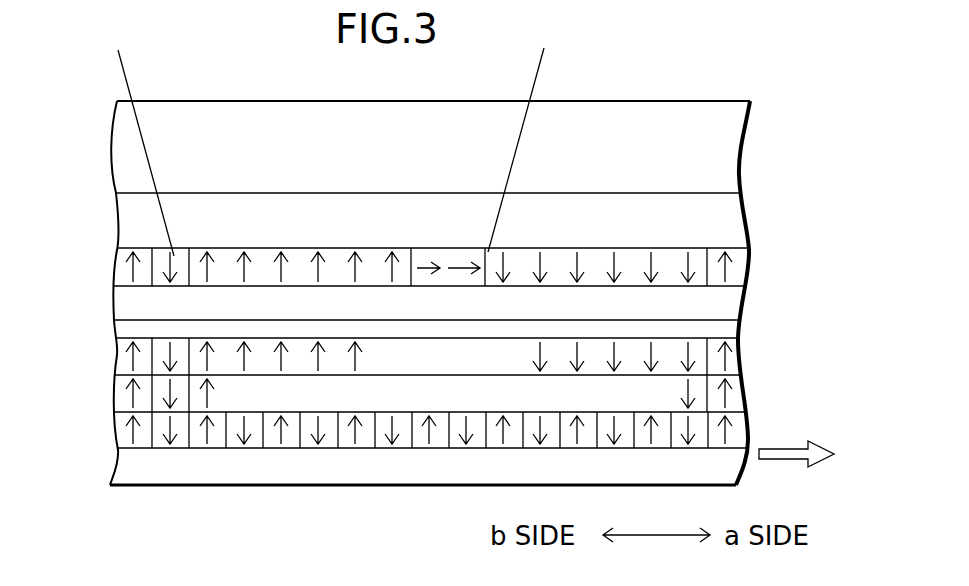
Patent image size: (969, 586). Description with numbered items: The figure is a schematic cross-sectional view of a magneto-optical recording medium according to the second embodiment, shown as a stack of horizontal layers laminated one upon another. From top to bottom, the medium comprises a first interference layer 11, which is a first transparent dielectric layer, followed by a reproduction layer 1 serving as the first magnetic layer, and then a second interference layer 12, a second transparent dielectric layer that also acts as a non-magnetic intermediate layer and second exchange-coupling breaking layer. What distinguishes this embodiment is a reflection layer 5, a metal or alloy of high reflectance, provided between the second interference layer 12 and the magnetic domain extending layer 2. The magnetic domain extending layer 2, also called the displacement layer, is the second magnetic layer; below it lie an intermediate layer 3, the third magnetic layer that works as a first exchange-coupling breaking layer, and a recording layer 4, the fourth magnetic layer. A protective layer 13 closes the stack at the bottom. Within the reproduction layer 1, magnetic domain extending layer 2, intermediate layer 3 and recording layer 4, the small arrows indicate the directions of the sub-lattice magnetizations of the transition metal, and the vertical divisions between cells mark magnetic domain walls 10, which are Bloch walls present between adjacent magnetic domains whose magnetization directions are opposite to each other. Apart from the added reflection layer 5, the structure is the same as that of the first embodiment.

The reproduction layer 1 is at (118, 263).
The magnetic domain extending layer 2 is at (117, 372).
The intermediate layer 3 is at (117, 408).
The recording layer 4 is at (118, 444).
The reflection layer 5 is at (116, 334).
The magnetic domain wall 10 is at (185, 448).
The first interference layer 11 is at (125, 222).
The second interference layer 12 is at (115, 305).
The protective layer 13 is at (122, 467).